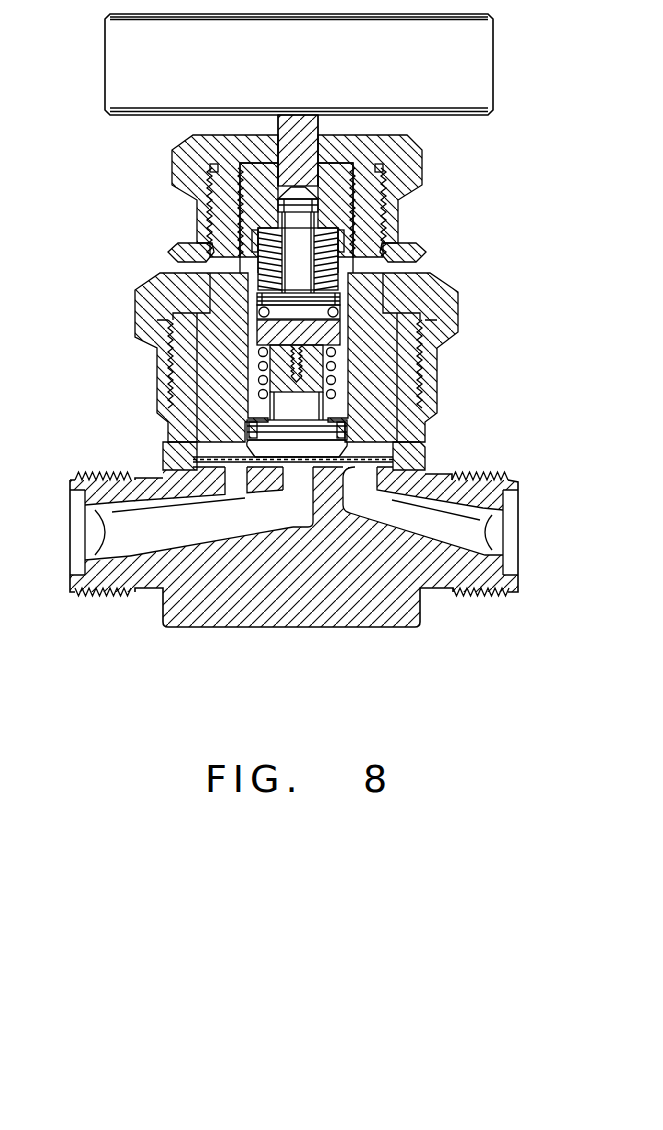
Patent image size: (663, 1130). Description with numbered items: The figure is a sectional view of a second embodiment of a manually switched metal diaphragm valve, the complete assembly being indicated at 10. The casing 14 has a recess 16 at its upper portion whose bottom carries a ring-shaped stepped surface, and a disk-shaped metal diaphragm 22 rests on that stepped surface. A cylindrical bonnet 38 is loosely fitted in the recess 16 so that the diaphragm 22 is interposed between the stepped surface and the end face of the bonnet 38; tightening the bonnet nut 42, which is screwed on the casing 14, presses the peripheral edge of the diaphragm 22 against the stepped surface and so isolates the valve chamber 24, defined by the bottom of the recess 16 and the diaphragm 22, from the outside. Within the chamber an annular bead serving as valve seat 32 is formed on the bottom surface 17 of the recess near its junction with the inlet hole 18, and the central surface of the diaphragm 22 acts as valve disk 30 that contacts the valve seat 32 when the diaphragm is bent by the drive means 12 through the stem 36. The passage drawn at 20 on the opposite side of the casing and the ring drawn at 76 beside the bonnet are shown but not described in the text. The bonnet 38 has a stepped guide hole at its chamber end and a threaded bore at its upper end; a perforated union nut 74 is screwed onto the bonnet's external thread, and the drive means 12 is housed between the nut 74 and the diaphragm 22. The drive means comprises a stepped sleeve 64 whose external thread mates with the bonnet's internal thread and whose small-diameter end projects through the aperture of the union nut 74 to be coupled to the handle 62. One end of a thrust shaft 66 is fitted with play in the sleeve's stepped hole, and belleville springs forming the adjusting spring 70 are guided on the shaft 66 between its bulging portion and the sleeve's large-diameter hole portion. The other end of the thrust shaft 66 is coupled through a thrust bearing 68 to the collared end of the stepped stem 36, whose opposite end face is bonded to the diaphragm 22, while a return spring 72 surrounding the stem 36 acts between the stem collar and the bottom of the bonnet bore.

The valve assembly 10 is at (505, 631).
The drive means 12 is at (486, 158).
The casing 14 is at (178, 626).
The recess 16 is at (458, 330).
The bottom surface 17 is at (245, 467).
The inlet hole 18 is at (145, 533).
The outlet port 20 is at (443, 530).
The metal diaphragm 22 is at (428, 450).
The valve chamber 24 is at (393, 460).
The valve disk 30 is at (300, 470).
The valve seat 32 is at (247, 500).
The stem 36 is at (245, 443).
The bonnet 38 is at (188, 395).
The bonnet nut 42 is at (137, 320).
The handle 62 is at (105, 70).
The sleeve 64 is at (422, 188).
The thrust shaft 66 is at (318, 236).
The thrust bearing 68 is at (355, 310).
The adjusting spring 70 is at (340, 268).
The return spring 72 is at (420, 396).
The union nut 74 is at (172, 172).
The washer 76 is at (170, 252).